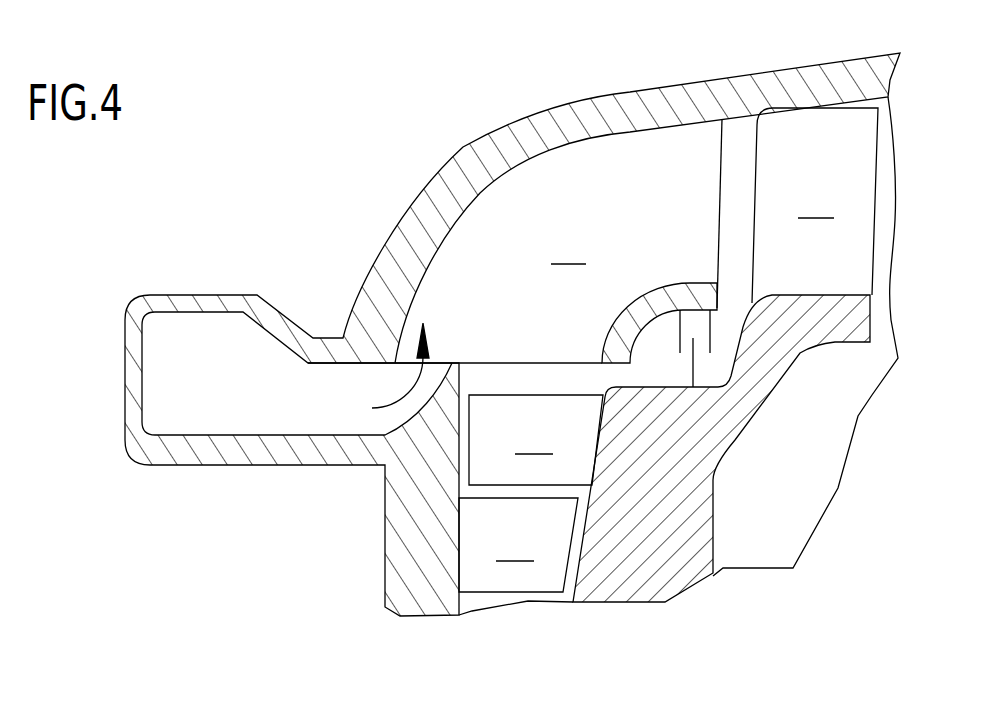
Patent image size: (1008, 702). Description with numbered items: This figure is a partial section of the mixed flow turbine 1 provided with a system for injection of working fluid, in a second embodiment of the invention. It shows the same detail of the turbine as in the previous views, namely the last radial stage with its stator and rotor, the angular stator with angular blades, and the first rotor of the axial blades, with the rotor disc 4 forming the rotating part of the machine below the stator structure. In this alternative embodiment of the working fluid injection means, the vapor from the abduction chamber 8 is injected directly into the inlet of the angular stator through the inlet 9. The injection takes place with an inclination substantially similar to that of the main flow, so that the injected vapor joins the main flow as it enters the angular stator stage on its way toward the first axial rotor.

The mixed flow turbine 1 is at (266, 160).
The rotor disc 4 is at (648, 478).
The abduction chamber 8 is at (182, 363).
The inlet 9 is at (405, 392).